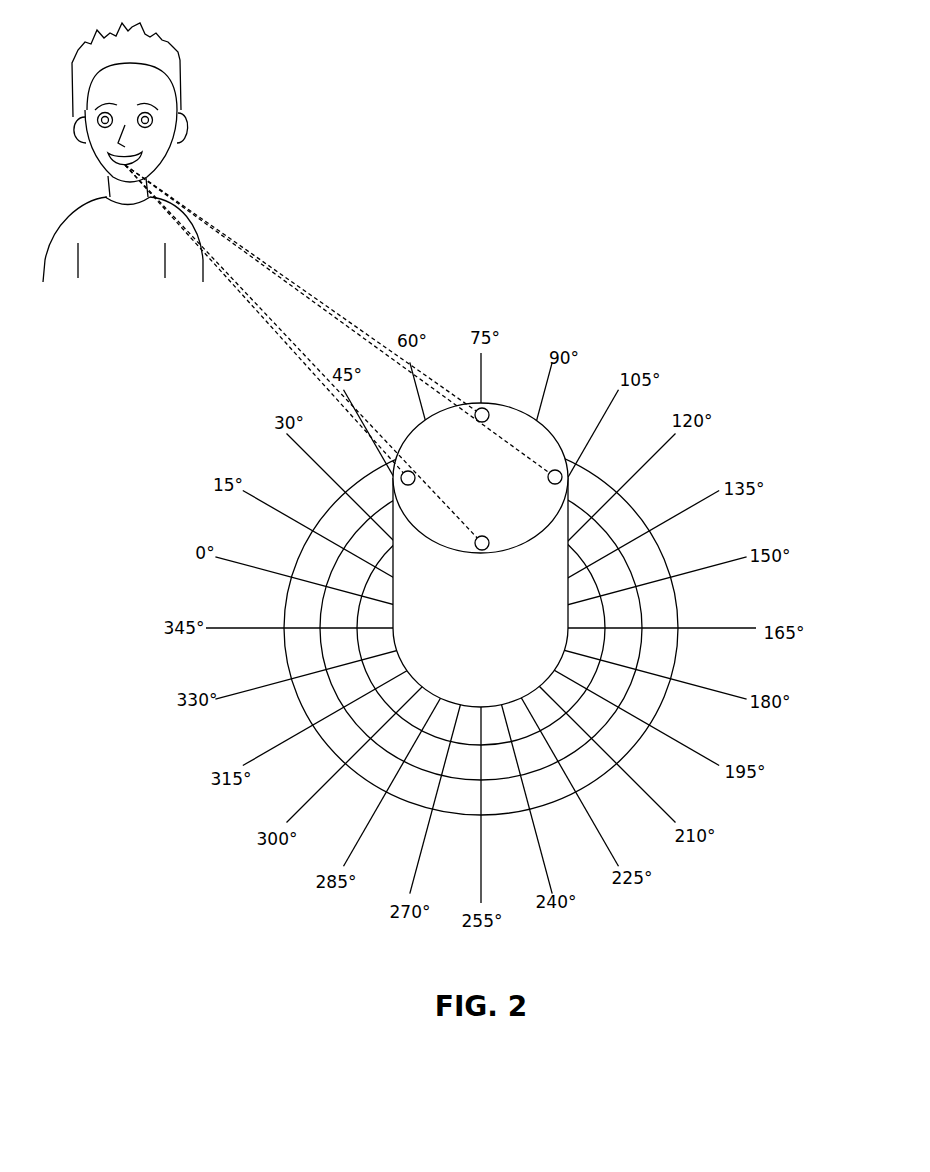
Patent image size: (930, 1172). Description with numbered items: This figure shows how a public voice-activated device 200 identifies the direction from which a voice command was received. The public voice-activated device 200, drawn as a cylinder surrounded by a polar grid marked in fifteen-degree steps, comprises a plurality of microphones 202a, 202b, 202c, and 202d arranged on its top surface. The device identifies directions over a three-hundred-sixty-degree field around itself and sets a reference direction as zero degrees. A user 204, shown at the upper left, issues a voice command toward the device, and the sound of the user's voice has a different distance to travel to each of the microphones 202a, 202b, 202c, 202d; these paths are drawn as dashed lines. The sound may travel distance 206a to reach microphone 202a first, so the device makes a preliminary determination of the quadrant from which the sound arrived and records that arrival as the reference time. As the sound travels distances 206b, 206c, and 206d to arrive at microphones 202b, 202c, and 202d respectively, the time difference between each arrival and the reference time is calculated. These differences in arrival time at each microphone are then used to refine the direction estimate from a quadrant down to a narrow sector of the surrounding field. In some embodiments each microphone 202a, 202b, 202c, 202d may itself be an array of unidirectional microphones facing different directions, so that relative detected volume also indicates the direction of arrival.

The public voice-activated device 200 is at (480, 555).
The microphone 202a is at (484, 409).
The microphone 202b is at (558, 470).
The microphone 202c is at (484, 550).
The microphone 202d is at (411, 485).
The user 204 is at (180, 86).
The distance 206a is at (297, 280).
The distance 206b is at (348, 323).
The distance 206c is at (262, 310).
The distance 206d is at (292, 350).